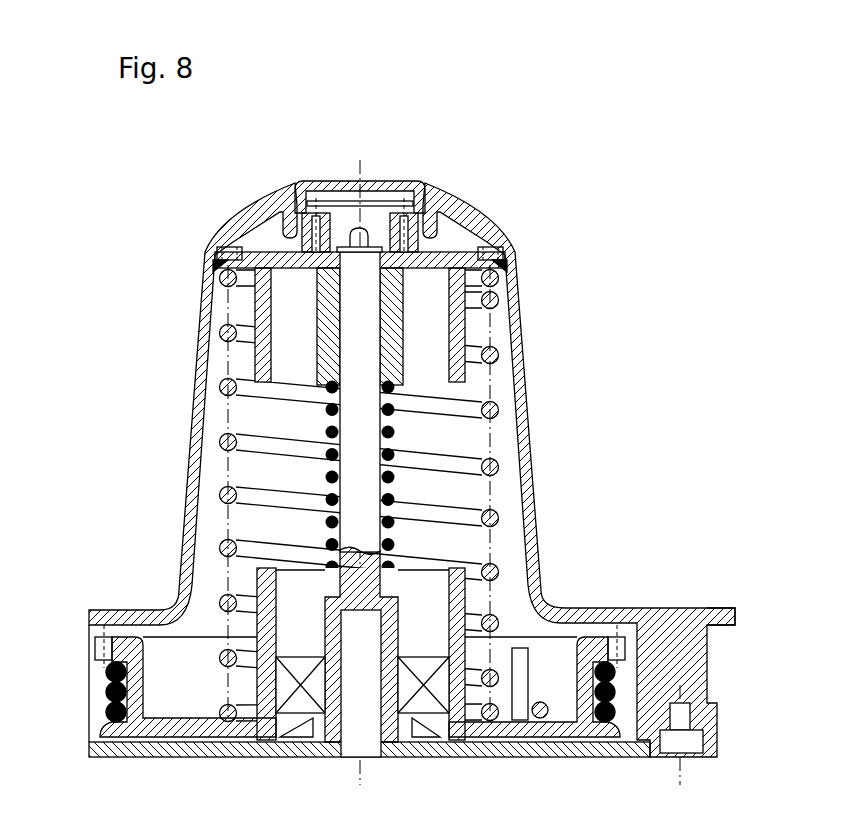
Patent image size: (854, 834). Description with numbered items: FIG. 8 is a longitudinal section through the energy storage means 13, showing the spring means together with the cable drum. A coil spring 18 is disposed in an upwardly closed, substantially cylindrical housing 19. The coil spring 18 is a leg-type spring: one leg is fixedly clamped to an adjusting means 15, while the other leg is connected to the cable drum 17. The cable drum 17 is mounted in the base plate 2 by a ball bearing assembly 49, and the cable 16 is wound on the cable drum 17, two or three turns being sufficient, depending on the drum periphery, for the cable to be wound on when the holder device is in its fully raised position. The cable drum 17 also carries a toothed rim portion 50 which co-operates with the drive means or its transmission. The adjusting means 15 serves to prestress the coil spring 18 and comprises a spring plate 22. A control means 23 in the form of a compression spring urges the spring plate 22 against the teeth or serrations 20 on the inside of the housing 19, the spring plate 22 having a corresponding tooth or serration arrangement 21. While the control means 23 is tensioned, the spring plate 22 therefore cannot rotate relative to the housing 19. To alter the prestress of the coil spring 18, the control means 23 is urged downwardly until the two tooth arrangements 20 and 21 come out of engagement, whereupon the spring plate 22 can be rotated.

The base plate 2 is at (720, 617).
The energy storage means 13 is at (384, 418).
The adjusting means 15 is at (313, 157).
The cable 16 is at (110, 712).
The cable drum 17 is at (473, 735).
The coil spring 18 is at (497, 407).
The housing 19 is at (200, 412).
The teeth or serrations 20 is at (513, 240).
The tooth or serration arrangement 21 is at (507, 263).
The spring plate 22 is at (265, 305).
The control means 23 is at (392, 493).
The ball bearing assembly 49 is at (428, 702).
The toothed rim portion 50 is at (110, 650).